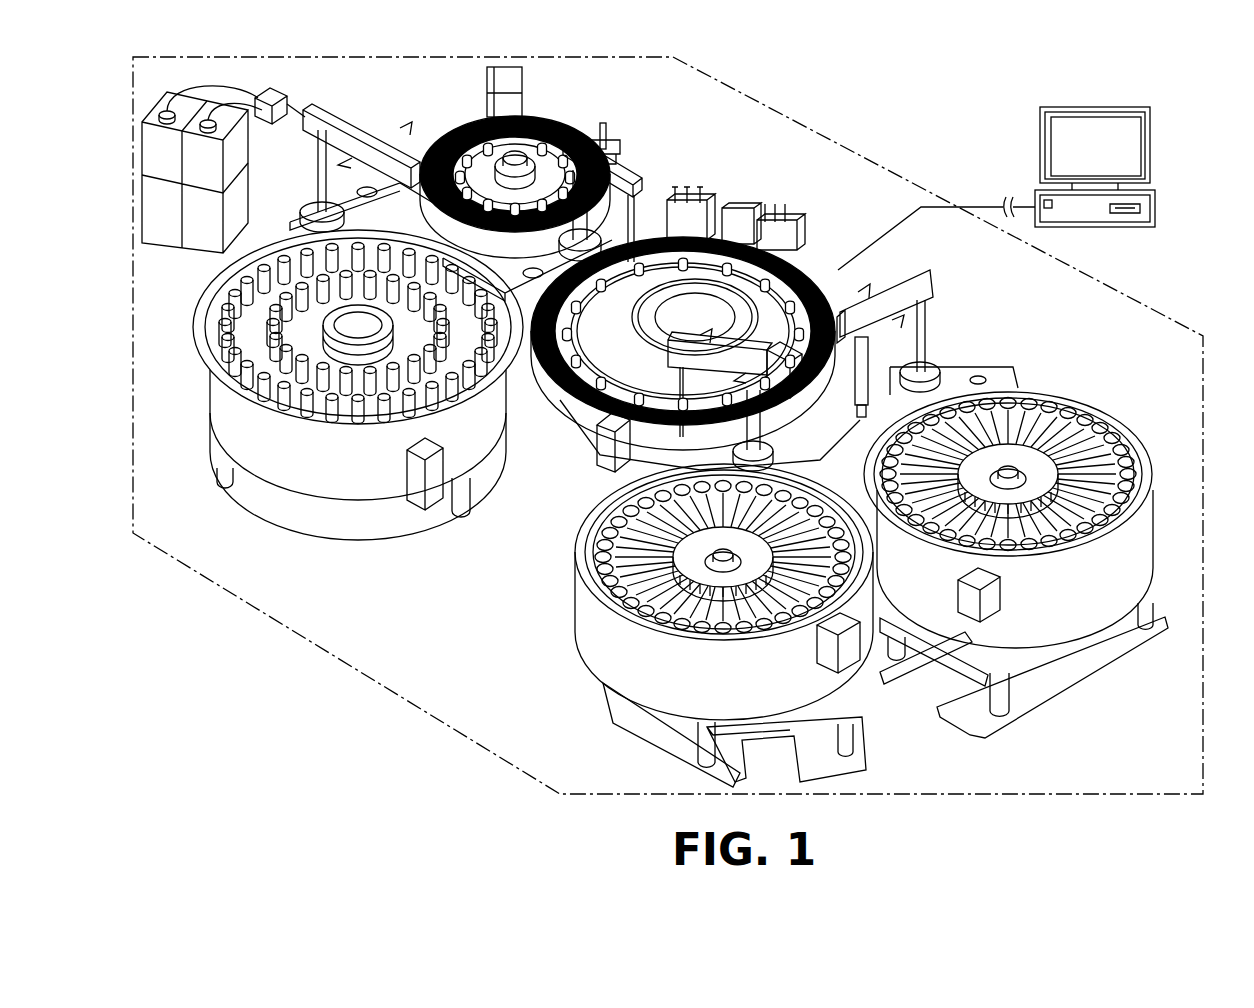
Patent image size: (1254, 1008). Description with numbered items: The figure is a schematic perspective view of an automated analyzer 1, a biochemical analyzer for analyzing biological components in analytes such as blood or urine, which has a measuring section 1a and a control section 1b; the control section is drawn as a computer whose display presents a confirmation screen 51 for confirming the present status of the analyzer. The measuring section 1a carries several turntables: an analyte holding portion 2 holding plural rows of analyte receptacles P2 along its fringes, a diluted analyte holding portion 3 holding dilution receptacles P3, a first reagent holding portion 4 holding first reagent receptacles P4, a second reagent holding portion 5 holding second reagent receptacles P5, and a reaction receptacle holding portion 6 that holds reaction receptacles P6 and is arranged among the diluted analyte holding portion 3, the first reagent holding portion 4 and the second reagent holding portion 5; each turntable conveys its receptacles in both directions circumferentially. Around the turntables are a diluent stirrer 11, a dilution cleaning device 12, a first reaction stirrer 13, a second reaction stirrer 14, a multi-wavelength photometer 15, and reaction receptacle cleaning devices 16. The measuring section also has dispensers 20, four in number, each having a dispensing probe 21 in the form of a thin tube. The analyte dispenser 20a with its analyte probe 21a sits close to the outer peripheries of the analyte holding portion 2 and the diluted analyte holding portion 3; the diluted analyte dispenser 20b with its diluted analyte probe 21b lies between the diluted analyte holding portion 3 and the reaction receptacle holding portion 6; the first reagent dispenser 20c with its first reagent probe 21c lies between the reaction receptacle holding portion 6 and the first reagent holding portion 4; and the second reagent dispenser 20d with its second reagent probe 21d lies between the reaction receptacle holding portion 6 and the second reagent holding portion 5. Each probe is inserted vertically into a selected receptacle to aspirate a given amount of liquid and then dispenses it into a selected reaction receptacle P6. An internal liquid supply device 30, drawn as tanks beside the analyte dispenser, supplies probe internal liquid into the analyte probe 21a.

The automated analyzer 1 is at (1202, 88).
The measuring section 1a is at (838, 145).
The control section 1b is at (1017, 167).
The confirmation screen 51 is at (1130, 148).
The analyte holding portion 2 is at (345, 385).
The diluted analyte holding portion 3 is at (468, 130).
The first reagent holding portion 4 is at (704, 625).
The second reagent holding portion 5 is at (1032, 551).
The reaction receptacle holding portion 6 is at (580, 412).
The diluent stirrer 11 is at (512, 78).
The dilution cleaning device 12 is at (612, 148).
The first reaction stirrer 13 is at (830, 425).
The second reaction stirrer 14 is at (860, 292).
The multi-wavelength photometer 15 is at (600, 450).
The reaction receptacle cleaning devices 16 is at (722, 200).
The dispensers 20 is at (645, 256).
The analyte dispenser 20a is at (355, 97).
The diluted analyte dispenser 20b is at (620, 172).
The first reagent dispenser 20c is at (735, 348).
The second reagent dispenser 20d is at (920, 272).
The dispensing probe 21 is at (637, 341).
The analyte probe 21a is at (312, 212).
The diluted analyte probe 21b is at (640, 208).
The first reagent probe 21c is at (600, 468).
The second reagent probe 21d is at (926, 350).
The internal liquid supply device 30 is at (166, 111).
The analyte receptacles P2 is at (236, 302).
The dilution receptacles P3 is at (560, 130).
The first reagent receptacles P4 is at (583, 597).
The second reagent receptacles P5 is at (1088, 420).
The reaction receptacles P6 is at (828, 262).